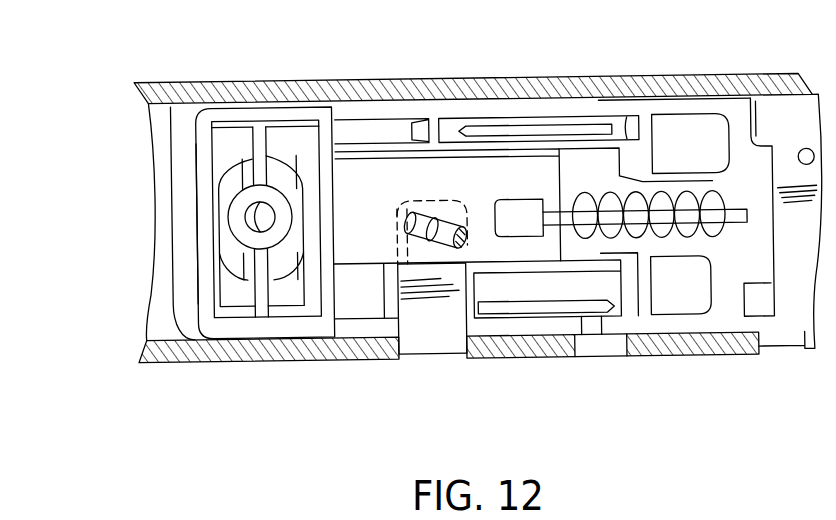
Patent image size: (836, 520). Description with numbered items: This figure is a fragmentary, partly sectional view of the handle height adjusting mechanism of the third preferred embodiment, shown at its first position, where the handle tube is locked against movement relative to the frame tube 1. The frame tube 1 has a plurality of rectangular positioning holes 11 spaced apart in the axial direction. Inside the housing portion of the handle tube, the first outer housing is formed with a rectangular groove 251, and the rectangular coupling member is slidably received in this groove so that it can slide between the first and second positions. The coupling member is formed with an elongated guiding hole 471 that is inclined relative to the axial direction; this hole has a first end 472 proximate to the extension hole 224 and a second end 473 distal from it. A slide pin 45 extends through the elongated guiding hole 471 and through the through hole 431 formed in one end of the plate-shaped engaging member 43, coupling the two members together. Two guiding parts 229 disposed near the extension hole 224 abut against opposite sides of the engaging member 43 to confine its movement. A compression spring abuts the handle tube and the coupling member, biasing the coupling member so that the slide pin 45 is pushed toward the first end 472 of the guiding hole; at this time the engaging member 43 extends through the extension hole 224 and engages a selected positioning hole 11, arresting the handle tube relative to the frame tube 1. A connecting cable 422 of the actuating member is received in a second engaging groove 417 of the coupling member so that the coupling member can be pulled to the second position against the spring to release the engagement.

The frame tube 1 is at (678, 358).
The positioning holes 11 is at (390, 350).
The guiding parts 229 is at (368, 338).
The extension hole 224 is at (420, 350).
The second engaging groove 417 is at (600, 330).
The connecting cable 422 is at (750, 213).
The engaging member 43 is at (440, 307).
The through hole 431 is at (435, 243).
The slide pin 45 is at (462, 230).
The elongated guiding hole 471 is at (424, 201).
The first end 472 is at (412, 208).
The second end 473 is at (412, 208).
The rectangular groove 251 is at (605, 258).